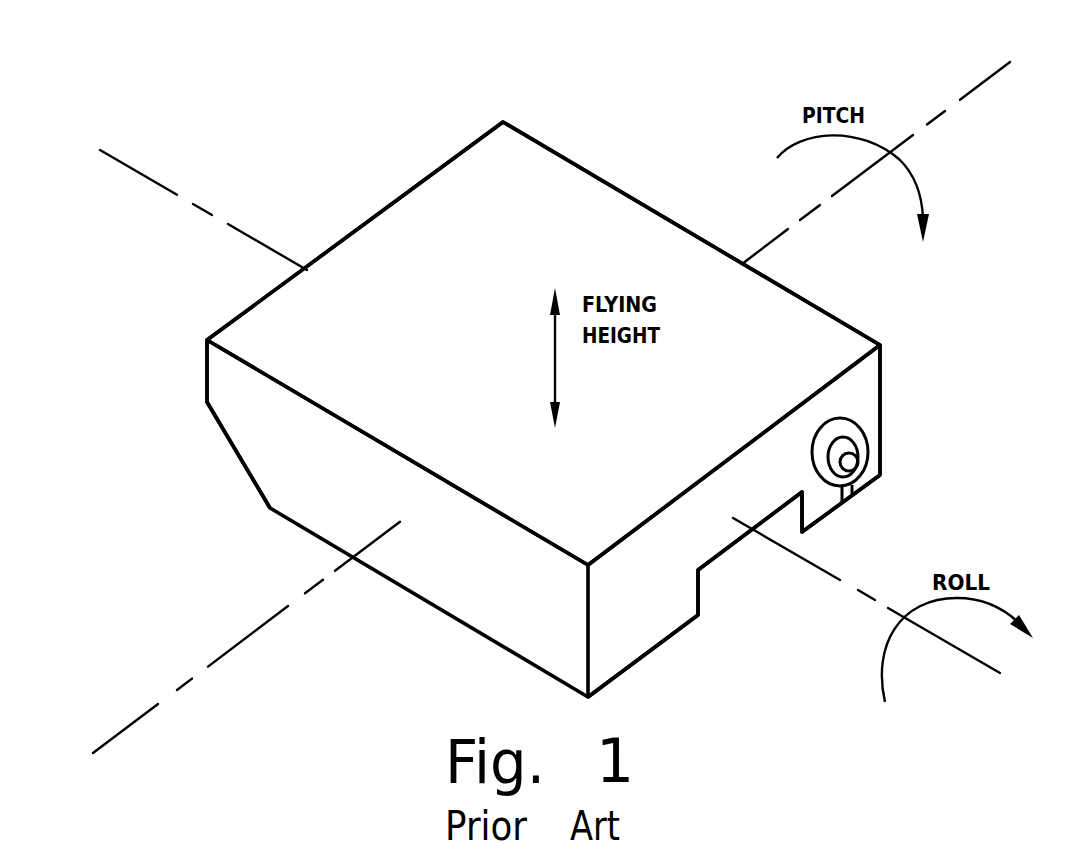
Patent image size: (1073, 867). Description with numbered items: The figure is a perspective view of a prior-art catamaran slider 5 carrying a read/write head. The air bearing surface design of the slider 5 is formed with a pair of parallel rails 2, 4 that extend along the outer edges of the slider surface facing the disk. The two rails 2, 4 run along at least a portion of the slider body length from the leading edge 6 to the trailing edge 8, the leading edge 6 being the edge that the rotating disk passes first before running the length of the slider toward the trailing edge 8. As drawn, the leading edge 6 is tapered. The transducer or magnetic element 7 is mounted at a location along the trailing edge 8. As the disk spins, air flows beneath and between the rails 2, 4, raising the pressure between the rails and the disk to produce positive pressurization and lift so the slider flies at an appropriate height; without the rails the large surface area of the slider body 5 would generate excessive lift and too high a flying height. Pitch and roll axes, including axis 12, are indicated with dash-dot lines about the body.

The rail 2 is at (838, 506).
The rail 4 is at (655, 652).
The catamaran slider 5 is at (593, 111).
The leading edge 6 is at (205, 373).
The transducer or magnetic element 7 is at (870, 445).
The trailing edge 8 is at (883, 382).
The pitch axis 12 is at (128, 164).